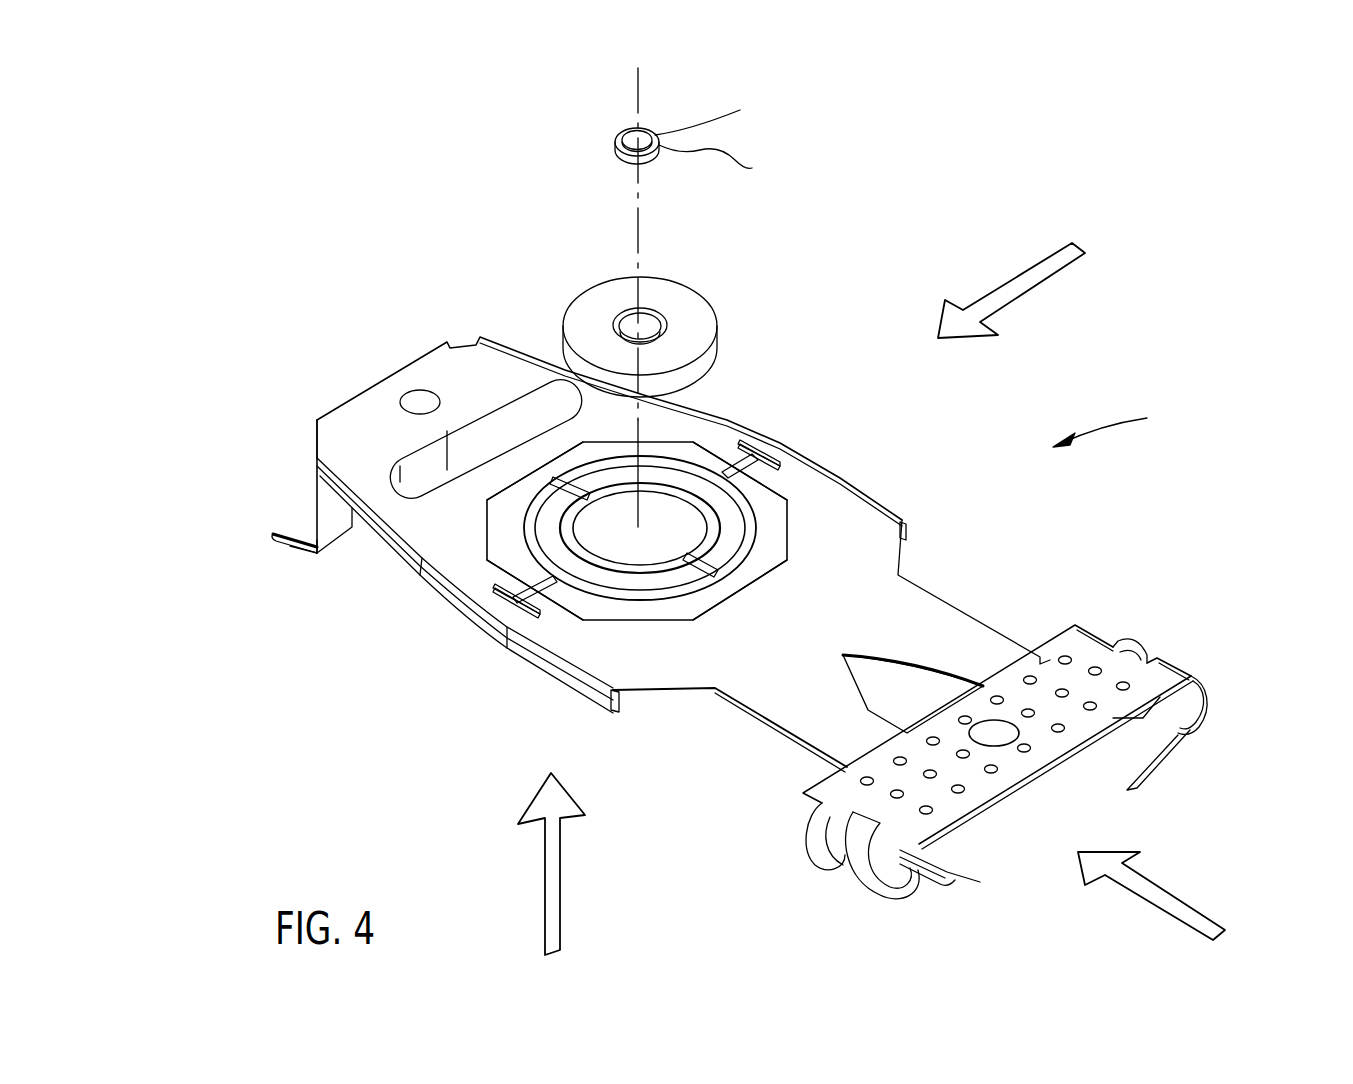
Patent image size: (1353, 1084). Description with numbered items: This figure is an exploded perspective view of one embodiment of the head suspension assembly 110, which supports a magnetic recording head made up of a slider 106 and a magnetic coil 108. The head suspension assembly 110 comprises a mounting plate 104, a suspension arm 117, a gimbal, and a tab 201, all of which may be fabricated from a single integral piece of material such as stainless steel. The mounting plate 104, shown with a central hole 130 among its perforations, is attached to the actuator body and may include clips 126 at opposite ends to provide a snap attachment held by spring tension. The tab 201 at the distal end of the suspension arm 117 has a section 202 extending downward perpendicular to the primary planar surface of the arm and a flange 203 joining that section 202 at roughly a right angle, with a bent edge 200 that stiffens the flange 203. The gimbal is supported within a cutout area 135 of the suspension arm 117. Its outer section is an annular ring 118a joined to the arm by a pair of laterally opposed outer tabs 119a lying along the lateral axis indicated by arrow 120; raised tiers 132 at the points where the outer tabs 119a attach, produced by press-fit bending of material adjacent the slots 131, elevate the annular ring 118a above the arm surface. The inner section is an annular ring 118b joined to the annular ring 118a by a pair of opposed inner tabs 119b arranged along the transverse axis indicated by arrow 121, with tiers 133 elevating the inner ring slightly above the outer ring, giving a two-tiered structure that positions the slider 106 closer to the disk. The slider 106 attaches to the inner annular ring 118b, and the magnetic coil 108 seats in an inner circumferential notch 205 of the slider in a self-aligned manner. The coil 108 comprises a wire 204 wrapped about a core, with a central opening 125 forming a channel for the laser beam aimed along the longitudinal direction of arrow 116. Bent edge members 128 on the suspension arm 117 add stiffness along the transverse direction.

The mounting plate 104 is at (1090, 632).
The slider 106 is at (695, 305).
The magnetic coil 108 is at (645, 130).
The head suspension assembly 110 is at (1124, 424).
The arrow (longitudinal direction) 116 is at (560, 884).
The suspension arm 117 is at (860, 523).
The annular ring (outer) 118a is at (700, 462).
The annular ring (inner) 118b is at (675, 490).
The outer tabs 119a is at (780, 483).
The inner tabs 119b is at (553, 490).
The arrow (lateral direction) 120 is at (1040, 282).
The arrow (transverse direction) 121 is at (1183, 913).
The opening 125 is at (622, 138).
The clips 126 is at (1208, 712).
The bent edge members 128 is at (910, 530).
The hole 130 is at (1008, 750).
The slots 131 is at (765, 480).
The raised tiers 132 is at (768, 445).
The tiers 133 is at (556, 478).
The cutout area 135 is at (747, 572).
The bent edge 200 is at (273, 537).
The tab 201 is at (317, 560).
The section 202 is at (315, 492).
The flange 203 is at (290, 547).
The wire 204 is at (740, 163).
The inner circumferential notch 205 is at (653, 313).